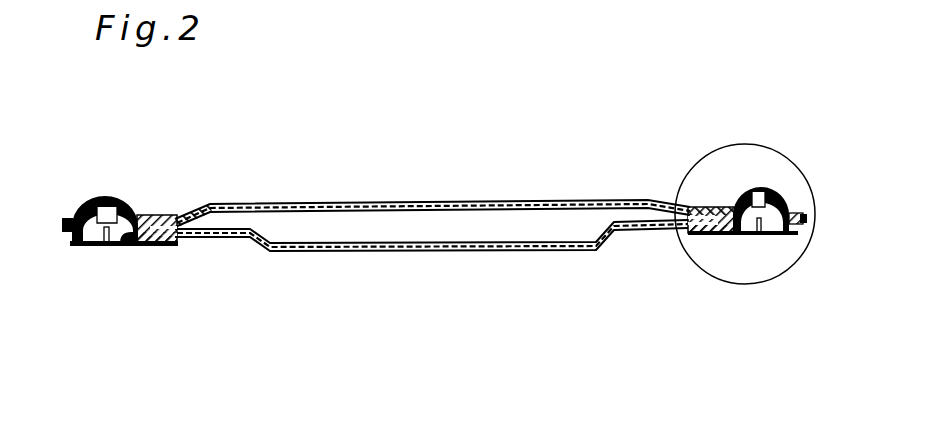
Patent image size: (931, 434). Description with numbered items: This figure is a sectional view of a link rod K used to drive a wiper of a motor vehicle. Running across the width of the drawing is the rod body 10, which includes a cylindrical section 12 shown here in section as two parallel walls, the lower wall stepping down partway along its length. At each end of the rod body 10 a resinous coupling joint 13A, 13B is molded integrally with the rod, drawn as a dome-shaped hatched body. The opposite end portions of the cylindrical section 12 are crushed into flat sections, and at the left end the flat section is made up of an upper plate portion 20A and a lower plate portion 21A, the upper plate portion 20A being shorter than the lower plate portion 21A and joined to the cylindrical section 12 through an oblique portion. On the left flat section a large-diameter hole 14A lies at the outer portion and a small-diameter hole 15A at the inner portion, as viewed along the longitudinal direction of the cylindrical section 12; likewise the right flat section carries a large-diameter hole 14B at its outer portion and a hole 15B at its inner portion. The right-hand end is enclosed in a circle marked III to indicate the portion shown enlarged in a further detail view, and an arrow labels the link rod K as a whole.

The rod body 10 is at (535, 203).
The cylindrical section 12 is at (436, 218).
The link rod K is at (363, 186).
The section line III is at (677, 239).
The resinous coupling joint 13A is at (121, 200).
The large-diameter hole 14A is at (120, 247).
The small-diameter hole 15A is at (180, 213).
The upper plate portion 20A is at (148, 214).
The lower plate portion 21A is at (151, 246).
The resinous coupling joint 13B is at (750, 189).
The large-diameter hole 14B is at (808, 212).
The hole 15B is at (710, 234).